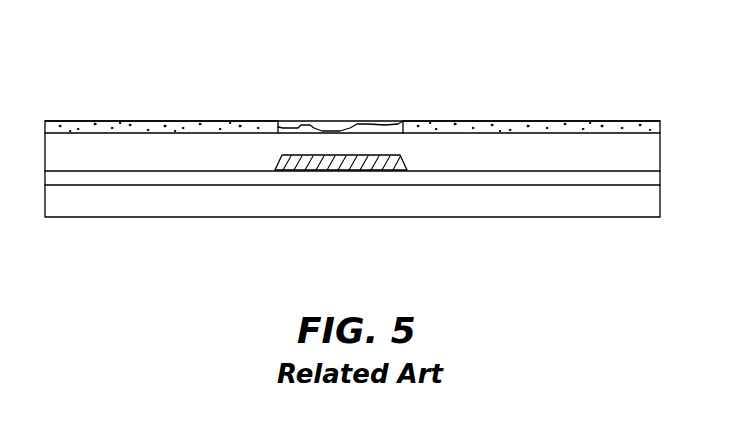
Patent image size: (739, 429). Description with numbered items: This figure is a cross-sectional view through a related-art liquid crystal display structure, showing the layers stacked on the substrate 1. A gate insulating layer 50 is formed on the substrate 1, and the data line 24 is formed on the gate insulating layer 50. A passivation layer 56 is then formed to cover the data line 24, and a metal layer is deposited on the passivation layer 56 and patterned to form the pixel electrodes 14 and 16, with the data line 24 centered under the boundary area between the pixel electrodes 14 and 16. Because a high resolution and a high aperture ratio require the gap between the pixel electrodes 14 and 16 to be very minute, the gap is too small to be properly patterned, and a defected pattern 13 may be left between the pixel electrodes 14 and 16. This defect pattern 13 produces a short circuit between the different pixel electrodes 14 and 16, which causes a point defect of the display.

The substrate 1 is at (389, 208).
The defected pattern 13 is at (292, 127).
The pixel electrode 14 is at (210, 121).
The pixel electrode 16 is at (544, 121).
The data line 24 is at (345, 172).
The gate insulating layer 50 is at (517, 177).
The passivation layer 56 is at (203, 162).